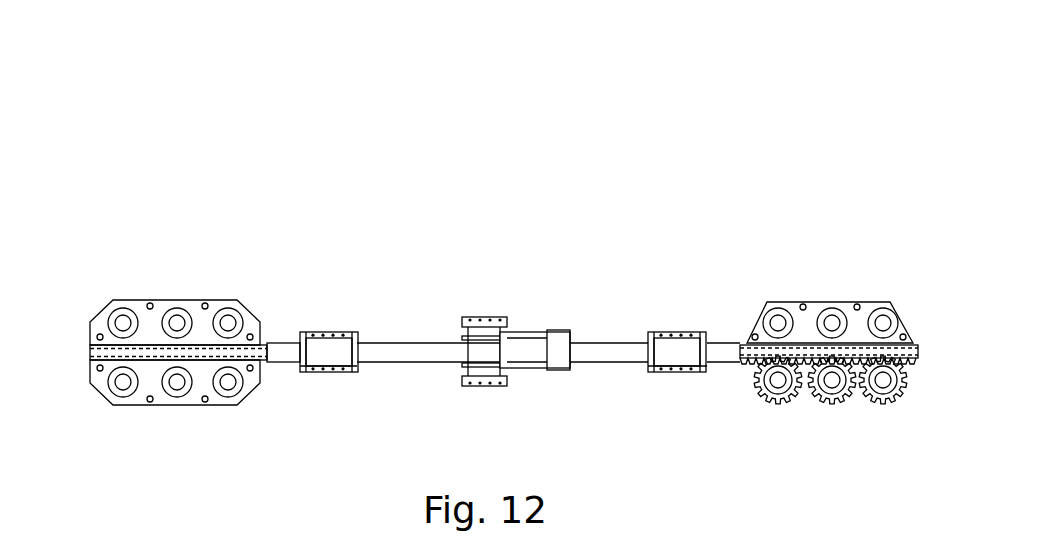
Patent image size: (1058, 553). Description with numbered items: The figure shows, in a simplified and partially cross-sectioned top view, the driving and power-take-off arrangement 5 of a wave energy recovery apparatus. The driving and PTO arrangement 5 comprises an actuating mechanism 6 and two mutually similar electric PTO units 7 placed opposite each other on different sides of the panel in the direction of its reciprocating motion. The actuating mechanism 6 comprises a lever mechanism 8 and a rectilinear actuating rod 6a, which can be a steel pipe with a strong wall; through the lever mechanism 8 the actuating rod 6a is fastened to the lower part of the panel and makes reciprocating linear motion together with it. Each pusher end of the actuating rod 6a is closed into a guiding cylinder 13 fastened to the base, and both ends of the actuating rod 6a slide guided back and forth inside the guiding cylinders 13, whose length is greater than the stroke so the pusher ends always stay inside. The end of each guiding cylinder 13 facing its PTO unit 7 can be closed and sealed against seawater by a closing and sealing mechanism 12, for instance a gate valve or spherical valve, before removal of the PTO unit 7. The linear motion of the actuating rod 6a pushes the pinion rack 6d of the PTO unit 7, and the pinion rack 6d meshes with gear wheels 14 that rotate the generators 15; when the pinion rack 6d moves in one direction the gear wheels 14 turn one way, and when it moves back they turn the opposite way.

The driving and power-take-off arrangement 5 is at (702, 70).
The actuating mechanism 6 is at (610, 287).
The rectilinear actuating rod 6a is at (405, 350).
The pinion rack 6d is at (740, 368).
The power-take-off unit 7 is at (173, 275).
The lever mechanism 8 is at (540, 305).
The closing and sealing mechanism 12 is at (350, 372).
The guiding cylinder 13 is at (325, 332).
The gear wheels 14 is at (832, 400).
The generators 15 is at (883, 323).